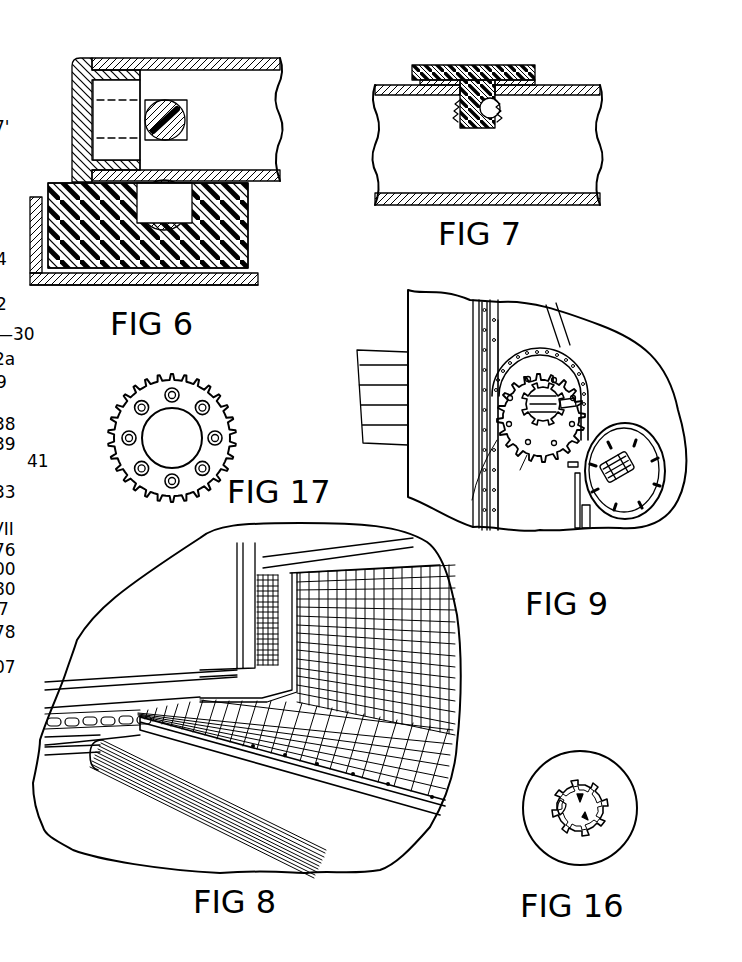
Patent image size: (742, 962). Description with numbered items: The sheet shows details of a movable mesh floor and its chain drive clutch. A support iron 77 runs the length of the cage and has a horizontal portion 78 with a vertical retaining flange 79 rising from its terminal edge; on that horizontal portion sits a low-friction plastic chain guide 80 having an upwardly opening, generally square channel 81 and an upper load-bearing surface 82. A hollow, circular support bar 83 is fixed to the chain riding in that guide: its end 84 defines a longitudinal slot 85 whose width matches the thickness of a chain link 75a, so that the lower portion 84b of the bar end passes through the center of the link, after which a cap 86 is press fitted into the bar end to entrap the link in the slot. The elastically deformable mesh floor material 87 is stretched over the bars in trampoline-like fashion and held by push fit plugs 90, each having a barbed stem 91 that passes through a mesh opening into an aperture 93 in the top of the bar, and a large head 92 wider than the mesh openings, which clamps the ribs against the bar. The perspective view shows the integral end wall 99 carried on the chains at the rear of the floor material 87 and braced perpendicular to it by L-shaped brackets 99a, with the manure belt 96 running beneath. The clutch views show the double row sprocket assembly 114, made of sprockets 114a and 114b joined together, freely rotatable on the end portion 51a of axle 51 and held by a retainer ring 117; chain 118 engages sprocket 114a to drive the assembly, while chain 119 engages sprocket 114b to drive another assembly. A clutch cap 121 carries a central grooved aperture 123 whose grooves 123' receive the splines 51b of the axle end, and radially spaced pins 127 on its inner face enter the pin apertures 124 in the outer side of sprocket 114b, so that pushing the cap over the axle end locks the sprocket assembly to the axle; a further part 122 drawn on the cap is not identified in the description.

In FIG. 6, the support bar 83 is at (241, 58).
In FIG. 7, the support bar 83 is at (585, 82).
In FIG. 6, the end of support bar 84 is at (107, 58).
In FIG. 6, the lower portion of bar end 84b is at (160, 152).
In FIG. 6, the slot 85 is at (110, 105).
In FIG. 6, the cap 86 is at (80, 70).
In FIG. 6, the chain link 75a is at (165, 110).
In FIG. 6, the chain guide 80 is at (232, 227).
In FIG. 6, the upwardly opening channel 81 is at (195, 210).
In FIG. 6, the upper load-bearing surface 82 is at (60, 187).
In FIG. 6, the horizontal portion 78 is at (247, 272).
In FIG. 6, the vertical retaining flange 79 is at (30, 232).
In FIG. 6, the support iron 77 is at (95, 290).
In FIG. 8, the support iron 77 is at (40, 743).
In FIG. 7, the floor material 87 is at (525, 80).
In FIG. 8, the floor material 87 is at (453, 762).
In FIG. 7, the push fit plug 90 is at (480, 64).
In FIG. 7, the barbed stem 91 is at (472, 128).
In FIG. 7, the head 92 is at (427, 65).
In FIG. 7, the aperture 93 is at (500, 115).
In FIG. 17, the double row sprocket assembly 114 is at (215, 420).
In FIG. 9, the double row sprocket assembly 114 is at (556, 470).
In FIG. 9, the sprocket 114a is at (478, 365).
In FIG. 9, the sprocket 114b is at (527, 452).
In FIG. 9, the retainer ring 117 is at (508, 430).
In FIG. 9, the chain 118 is at (551, 303).
In FIG. 9, the chain 119 is at (488, 480).
In FIG. 17, the pin apertures 124 is at (205, 405).
In FIG. 9, the pin apertures 124 is at (530, 352).
In FIG. 17, the pins 127 is at (172, 438).
In FIG. 9, the pins 127 is at (622, 450).
In FIG. 9, the axle 51 is at (360, 375).
In FIG. 9, the end portion of axle 51a is at (572, 404).
In FIG. 16, the end portion of axle 51a is at (590, 800).
In FIG. 9, the splines 51b is at (558, 392).
In FIG. 16, the splines 51b is at (576, 788).
In FIG. 9, the clutch cap 121 is at (633, 518).
In FIG. 16, the clutch cap 121 is at (612, 833).
In FIG. 9, the end plate rim 122 is at (660, 518).
In FIG. 9, the central grooved aperture 123 is at (625, 508).
In FIG. 16, the central grooved aperture 123 is at (624, 782).
In FIG. 9, the grooves 123' is at (554, 512).
In FIG. 16, the grooves 123' is at (538, 769).
In FIG. 8, the manure belt 96 is at (291, 804).
In FIG. 8, the integral end wall 99 is at (455, 637).
In FIG. 8, the L-shaped brackets 99a is at (180, 707).